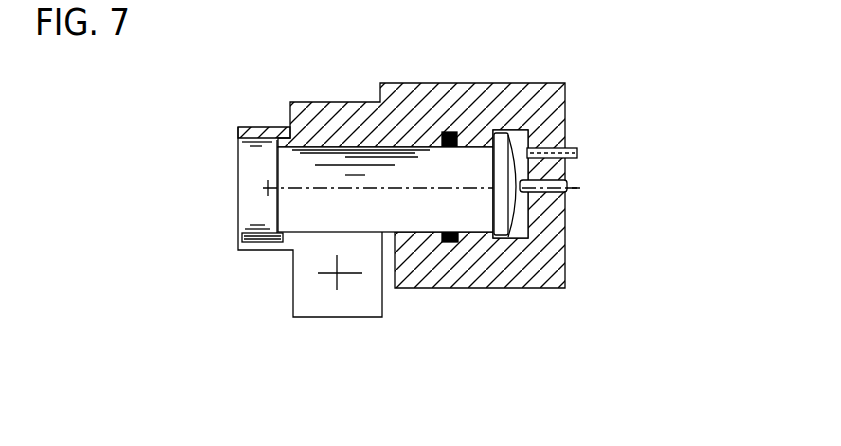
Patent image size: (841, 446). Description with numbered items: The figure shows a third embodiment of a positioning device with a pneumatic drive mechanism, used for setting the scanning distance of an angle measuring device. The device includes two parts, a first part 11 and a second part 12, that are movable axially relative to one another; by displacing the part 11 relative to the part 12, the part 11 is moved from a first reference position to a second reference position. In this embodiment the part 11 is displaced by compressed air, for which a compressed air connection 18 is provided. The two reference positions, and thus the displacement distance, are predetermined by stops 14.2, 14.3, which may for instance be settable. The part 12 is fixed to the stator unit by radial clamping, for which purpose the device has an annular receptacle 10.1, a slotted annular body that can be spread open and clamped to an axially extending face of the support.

The annular receptacle 10.1 is at (254, 247).
The first part 11 is at (326, 166).
The second part 12 is at (421, 92).
The stop 14.2 is at (527, 122).
The stop 14.3 is at (482, 140).
The compressed air connection 18 is at (540, 148).